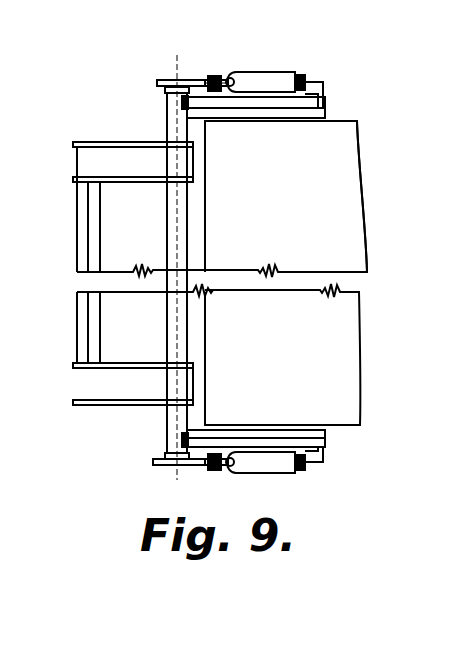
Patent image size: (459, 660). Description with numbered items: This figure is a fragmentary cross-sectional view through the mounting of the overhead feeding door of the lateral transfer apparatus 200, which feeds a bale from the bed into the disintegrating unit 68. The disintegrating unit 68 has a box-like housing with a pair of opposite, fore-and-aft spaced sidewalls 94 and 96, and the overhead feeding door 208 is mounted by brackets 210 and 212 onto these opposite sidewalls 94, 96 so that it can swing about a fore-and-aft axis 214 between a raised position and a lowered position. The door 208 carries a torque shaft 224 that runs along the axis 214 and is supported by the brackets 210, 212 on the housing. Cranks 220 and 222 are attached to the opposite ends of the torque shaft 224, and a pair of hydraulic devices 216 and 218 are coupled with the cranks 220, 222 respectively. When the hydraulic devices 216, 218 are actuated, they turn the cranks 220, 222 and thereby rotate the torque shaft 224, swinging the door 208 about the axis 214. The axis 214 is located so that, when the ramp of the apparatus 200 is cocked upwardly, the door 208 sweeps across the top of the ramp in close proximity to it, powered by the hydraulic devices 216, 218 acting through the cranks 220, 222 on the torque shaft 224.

The disintegrating unit 68 is at (357, 120).
The sidewall 94 is at (337, 427).
The sidewall 96 is at (337, 120).
The lateral transfer apparatus 200 is at (70, 147).
The overhead feeding door 208 is at (117, 392).
The bracket 210 is at (222, 437).
The bracket 212 is at (235, 108).
The fore-and-aft axis 214 is at (174, 229).
The hydraulic device 216 is at (262, 72).
The hydraulic device 218 is at (272, 468).
The crank 220 is at (193, 81).
The crank 222 is at (197, 466).
The torque shaft 224 is at (170, 80).